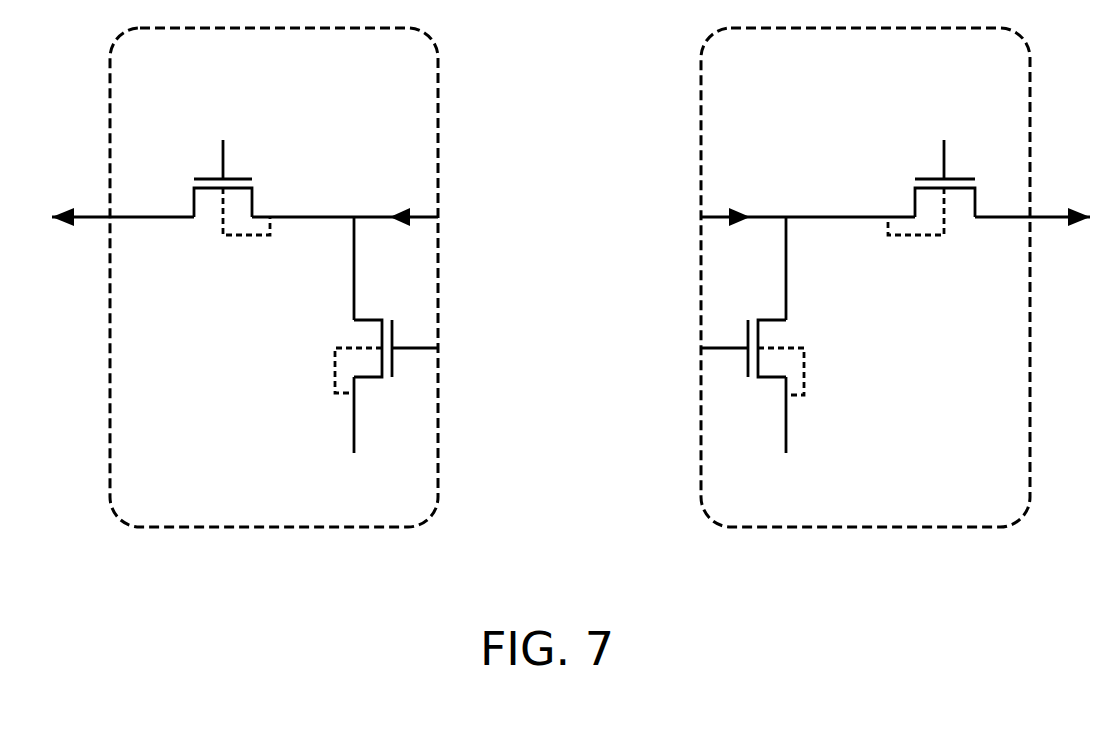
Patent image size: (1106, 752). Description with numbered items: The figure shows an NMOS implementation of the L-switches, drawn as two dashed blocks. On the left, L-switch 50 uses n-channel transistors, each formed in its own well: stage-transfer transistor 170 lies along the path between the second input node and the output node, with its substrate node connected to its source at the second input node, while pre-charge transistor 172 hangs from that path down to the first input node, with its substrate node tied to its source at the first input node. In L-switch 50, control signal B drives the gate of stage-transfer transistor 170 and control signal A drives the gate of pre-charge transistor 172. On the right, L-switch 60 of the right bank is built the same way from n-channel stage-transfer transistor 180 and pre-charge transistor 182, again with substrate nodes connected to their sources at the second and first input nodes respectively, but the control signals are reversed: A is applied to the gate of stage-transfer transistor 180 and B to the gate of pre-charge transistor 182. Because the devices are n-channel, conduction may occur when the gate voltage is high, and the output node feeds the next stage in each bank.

The L-switch 50 is at (238, 393).
The L-switch 60 is at (948, 458).
The stage-transfer transistor 170 is at (194, 218).
The pre-charge transistor 172 is at (353, 317).
The stage-transfer transistor 180 is at (973, 218).
The pre-charge transistor 182 is at (786, 320).